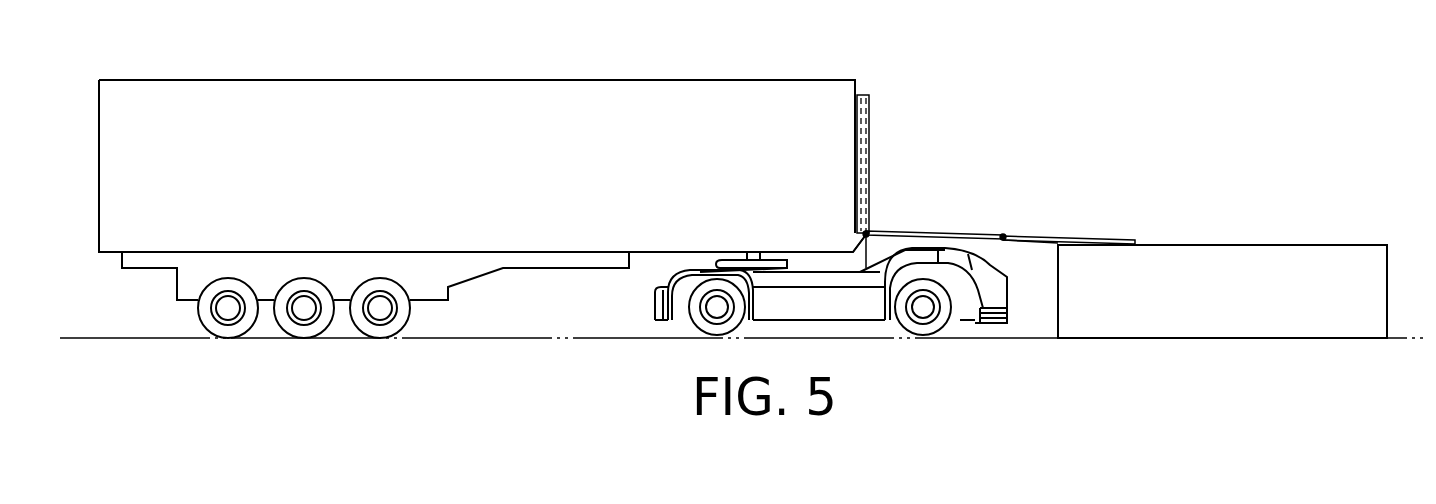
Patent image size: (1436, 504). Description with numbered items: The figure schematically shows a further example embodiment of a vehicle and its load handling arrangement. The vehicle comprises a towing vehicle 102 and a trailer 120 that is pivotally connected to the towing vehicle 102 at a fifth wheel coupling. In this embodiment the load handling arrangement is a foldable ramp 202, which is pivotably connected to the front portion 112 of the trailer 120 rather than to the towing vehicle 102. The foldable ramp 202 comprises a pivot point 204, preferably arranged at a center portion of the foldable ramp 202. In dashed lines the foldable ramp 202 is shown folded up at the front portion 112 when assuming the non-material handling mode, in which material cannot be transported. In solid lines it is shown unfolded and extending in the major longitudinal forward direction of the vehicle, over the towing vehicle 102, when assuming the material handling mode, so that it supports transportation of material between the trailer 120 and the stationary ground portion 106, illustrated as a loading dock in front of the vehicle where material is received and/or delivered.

The trailer 120 is at (735, 128).
The pivot point 204 is at (866, 96).
The foldable ramp 202 is at (915, 233).
The stationary ground portion 106 is at (1172, 296).
The towing vehicle 102 is at (975, 290).
The front portion 112 is at (866, 250).